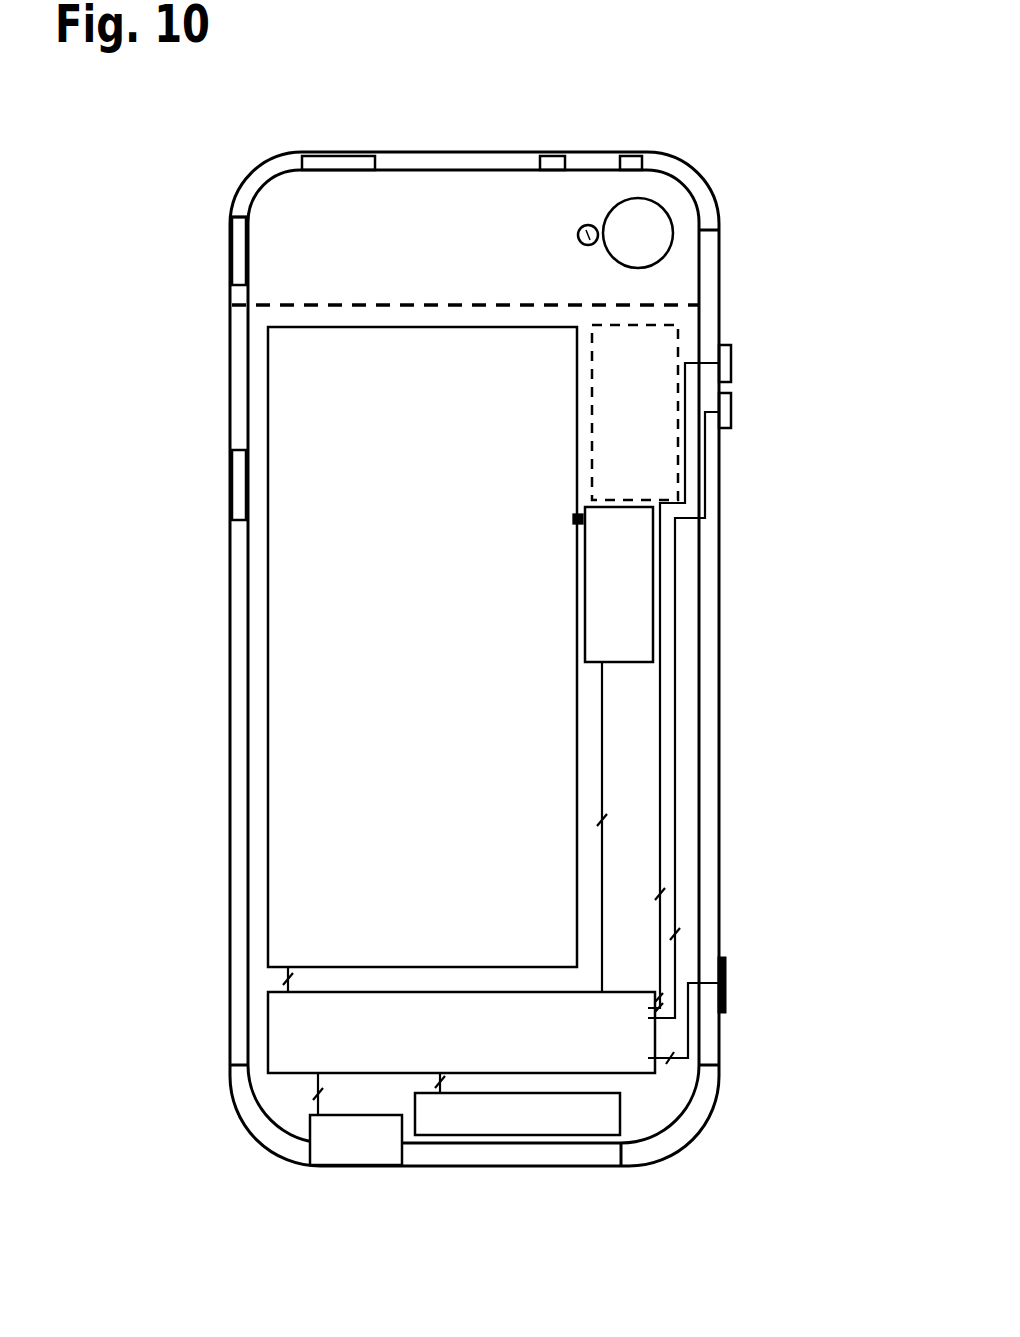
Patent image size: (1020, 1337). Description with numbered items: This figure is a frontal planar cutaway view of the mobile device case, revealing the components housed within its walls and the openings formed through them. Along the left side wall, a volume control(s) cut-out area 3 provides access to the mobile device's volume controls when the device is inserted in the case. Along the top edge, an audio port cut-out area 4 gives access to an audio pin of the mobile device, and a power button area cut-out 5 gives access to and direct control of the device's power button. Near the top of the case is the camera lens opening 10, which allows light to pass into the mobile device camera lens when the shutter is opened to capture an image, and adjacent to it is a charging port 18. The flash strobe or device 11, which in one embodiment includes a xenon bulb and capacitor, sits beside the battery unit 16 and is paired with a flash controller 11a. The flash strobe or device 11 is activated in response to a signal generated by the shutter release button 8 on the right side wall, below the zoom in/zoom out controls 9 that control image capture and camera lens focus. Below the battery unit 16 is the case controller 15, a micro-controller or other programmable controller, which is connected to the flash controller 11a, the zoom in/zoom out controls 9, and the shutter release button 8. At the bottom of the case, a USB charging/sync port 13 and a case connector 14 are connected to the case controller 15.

The volume control(s) cut-out area 3 is at (220, 218).
The audio port cut-out area 4 is at (375, 148).
The power button area cut-out 5 is at (540, 148).
The shutter release button 8 is at (735, 985).
The zoom in/zoom out controls 9 is at (731, 358).
The camera lens opening 10 is at (632, 240).
The flash strobe or device 11 is at (637, 447).
The flash controller 11a is at (635, 633).
The USB charging/sync port 13 is at (335, 1168).
The case connector 14 is at (608, 1113).
The case controller 15 is at (285, 1025).
The battery unit 16 is at (312, 783).
The charging port 18 is at (582, 226).